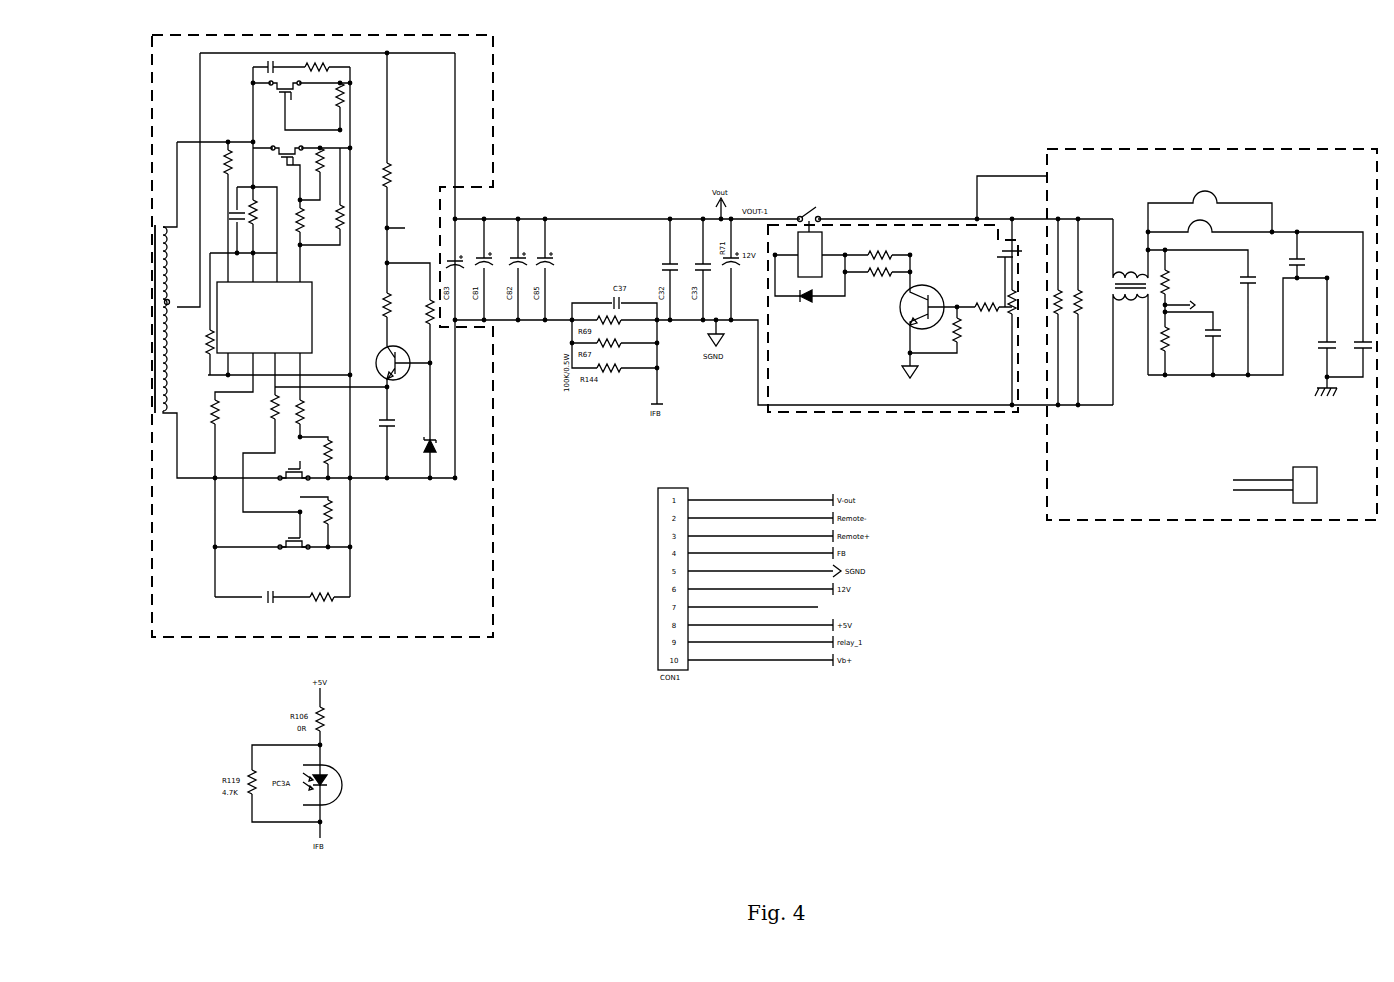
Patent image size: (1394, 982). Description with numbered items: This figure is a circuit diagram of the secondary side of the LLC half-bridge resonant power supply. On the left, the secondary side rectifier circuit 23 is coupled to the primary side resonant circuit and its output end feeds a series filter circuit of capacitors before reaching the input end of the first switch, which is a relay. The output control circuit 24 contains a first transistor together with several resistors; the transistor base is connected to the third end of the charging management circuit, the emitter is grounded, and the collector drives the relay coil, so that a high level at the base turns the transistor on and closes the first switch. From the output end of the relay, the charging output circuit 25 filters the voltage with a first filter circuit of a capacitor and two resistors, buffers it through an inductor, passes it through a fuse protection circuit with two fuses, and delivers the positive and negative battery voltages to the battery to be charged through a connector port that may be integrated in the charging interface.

The secondary side rectifier circuit 23 is at (355, 35).
The output control circuit 24 is at (760, 411).
The charging output circuit 25 is at (1253, 149).